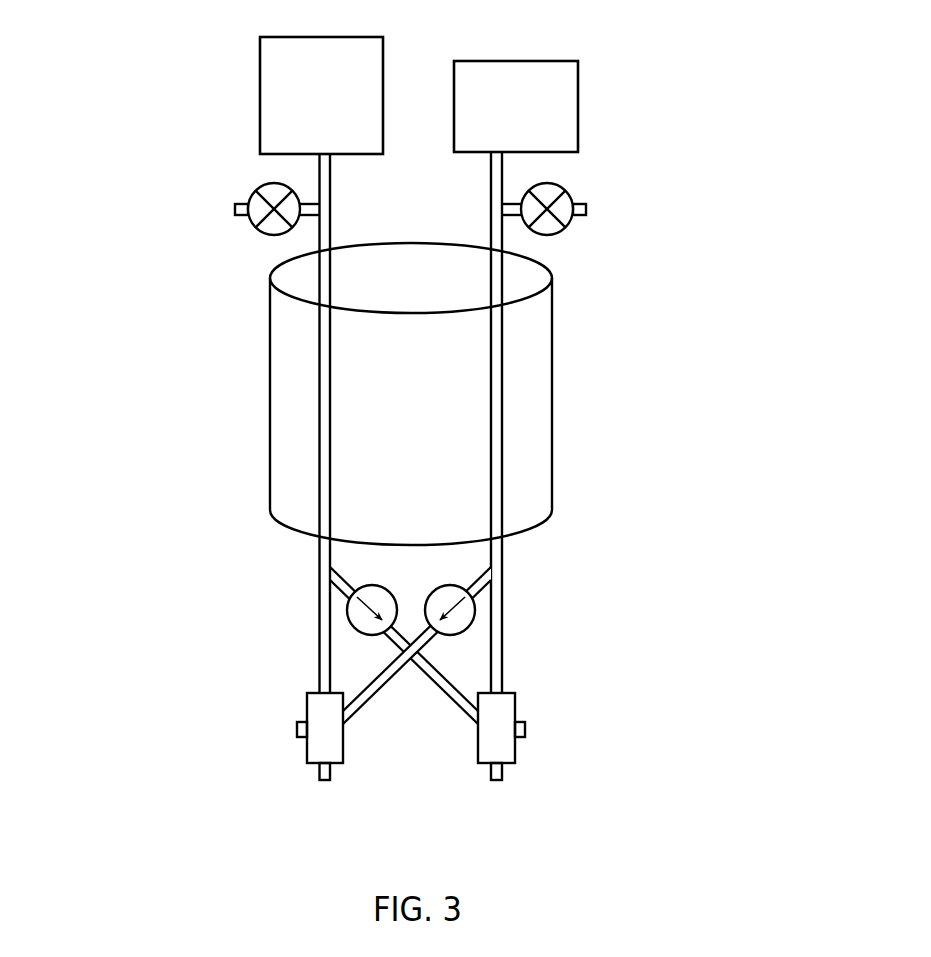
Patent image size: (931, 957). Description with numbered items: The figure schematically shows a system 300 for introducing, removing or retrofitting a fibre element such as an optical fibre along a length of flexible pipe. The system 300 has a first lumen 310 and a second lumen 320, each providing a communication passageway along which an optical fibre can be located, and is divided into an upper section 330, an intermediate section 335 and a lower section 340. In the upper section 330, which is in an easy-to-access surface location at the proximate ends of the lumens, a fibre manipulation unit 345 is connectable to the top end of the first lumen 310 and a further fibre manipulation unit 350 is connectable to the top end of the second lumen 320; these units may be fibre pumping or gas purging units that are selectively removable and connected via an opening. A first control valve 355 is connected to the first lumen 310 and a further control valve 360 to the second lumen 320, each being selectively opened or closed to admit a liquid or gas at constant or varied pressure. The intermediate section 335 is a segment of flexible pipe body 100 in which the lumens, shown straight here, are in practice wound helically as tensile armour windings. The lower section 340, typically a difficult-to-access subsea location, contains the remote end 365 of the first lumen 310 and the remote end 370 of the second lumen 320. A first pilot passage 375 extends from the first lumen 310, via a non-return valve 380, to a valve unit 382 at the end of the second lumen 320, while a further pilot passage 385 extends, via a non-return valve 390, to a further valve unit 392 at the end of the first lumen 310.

The flexible pipe body 100 is at (538, 413).
The system 300 is at (695, 65).
The first lumen 310 is at (327, 222).
The second lumen 320 is at (492, 197).
The upper section 330 is at (153, 147).
The intermediate section 335 is at (157, 409).
The lower section 340 is at (169, 635).
The fibre manipulation unit 345 is at (298, 50).
The further fibre manipulation unit 350 is at (510, 68).
The first control valve 355 is at (235, 258).
The further control valve 360 is at (565, 230).
The remote end of the first lumen 365 is at (265, 657).
The remote end of the further lumen 370 is at (560, 652).
The first pilot passage 375 is at (445, 682).
The non-return valve 380 is at (377, 597).
The further pilot passage 385 is at (360, 702).
The non-return valve 390 is at (467, 615).
The further valve unit 392 is at (265, 782).
The valve unit 382 is at (463, 790).